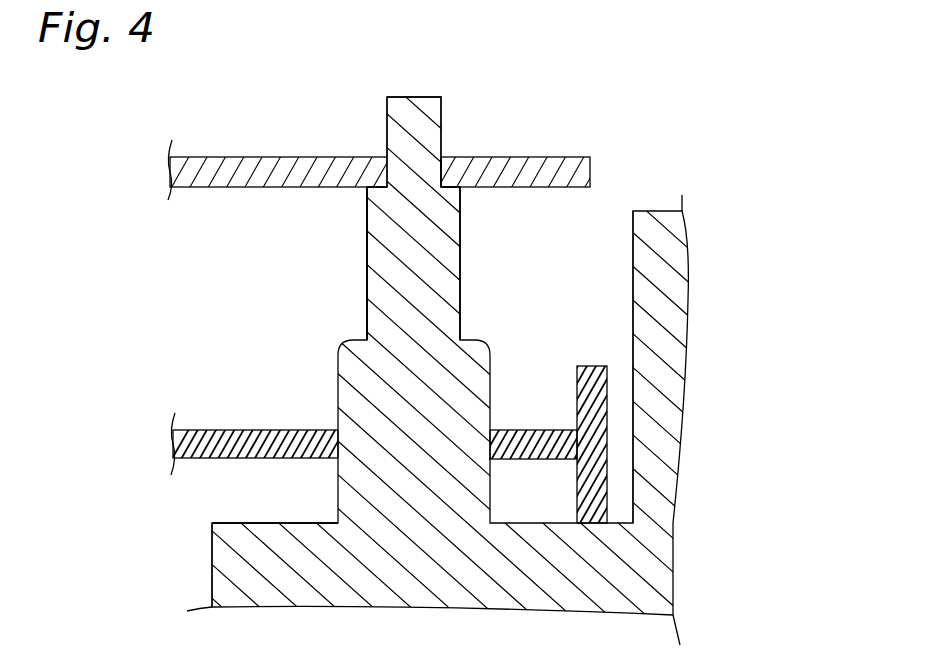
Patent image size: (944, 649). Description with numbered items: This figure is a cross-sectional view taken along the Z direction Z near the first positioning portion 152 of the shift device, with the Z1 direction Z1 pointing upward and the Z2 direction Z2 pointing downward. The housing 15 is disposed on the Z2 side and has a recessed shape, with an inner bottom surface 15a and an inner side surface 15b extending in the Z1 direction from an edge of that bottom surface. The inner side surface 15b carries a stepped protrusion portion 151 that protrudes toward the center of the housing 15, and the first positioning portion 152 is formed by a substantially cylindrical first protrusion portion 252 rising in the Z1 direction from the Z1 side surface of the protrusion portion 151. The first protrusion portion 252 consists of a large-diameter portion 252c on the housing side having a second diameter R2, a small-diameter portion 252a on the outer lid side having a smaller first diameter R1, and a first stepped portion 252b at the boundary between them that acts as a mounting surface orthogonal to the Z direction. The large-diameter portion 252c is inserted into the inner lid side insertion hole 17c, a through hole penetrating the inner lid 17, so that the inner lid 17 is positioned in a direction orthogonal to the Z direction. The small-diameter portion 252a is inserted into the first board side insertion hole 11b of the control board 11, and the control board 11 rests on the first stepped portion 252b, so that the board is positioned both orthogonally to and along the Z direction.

The control board 11 is at (287, 157).
The first board side insertion hole 11b is at (441, 157).
The housing 15 is at (669, 209).
The inner bottom surface 15a is at (210, 548).
The inner side surface 15b is at (631, 238).
The protrusion portion 151 is at (240, 523).
The first positioning portion 152 is at (316, 278).
The inner lid 17 is at (261, 427).
The inner lid side insertion hole 17c is at (490, 430).
The first protrusion portion 252 is at (365, 232).
The small-diameter portion 252a is at (387, 128).
The first stepped portion 252b is at (460, 187).
The large-diameter portion 252c is at (366, 323).
The first diameter R1 is at (439, 75).
The second diameter R2 is at (458, 253).
The Z direction Z is at (770, 85).
The Z1 direction Z1 is at (805, 85).
The Z2 direction Z2 is at (805, 143).